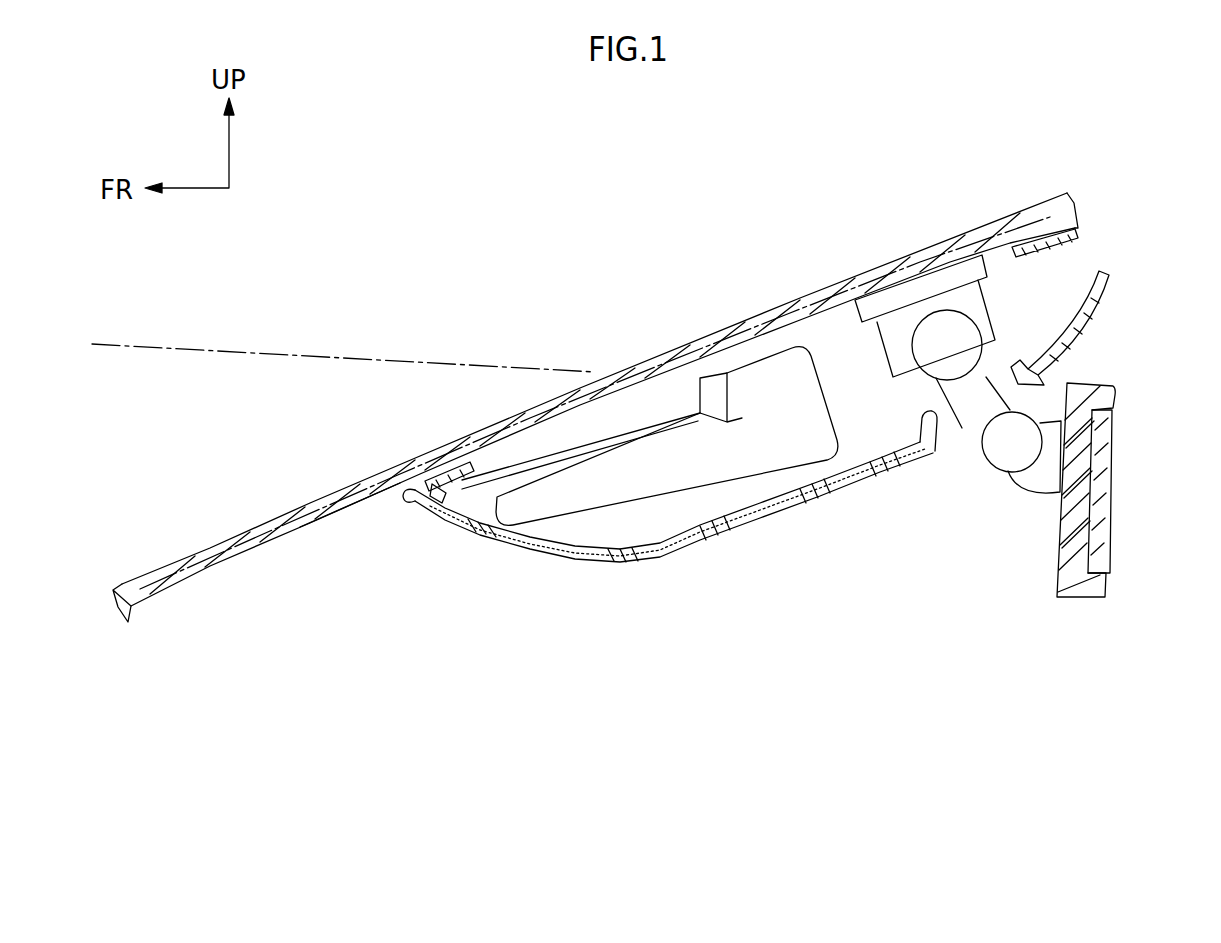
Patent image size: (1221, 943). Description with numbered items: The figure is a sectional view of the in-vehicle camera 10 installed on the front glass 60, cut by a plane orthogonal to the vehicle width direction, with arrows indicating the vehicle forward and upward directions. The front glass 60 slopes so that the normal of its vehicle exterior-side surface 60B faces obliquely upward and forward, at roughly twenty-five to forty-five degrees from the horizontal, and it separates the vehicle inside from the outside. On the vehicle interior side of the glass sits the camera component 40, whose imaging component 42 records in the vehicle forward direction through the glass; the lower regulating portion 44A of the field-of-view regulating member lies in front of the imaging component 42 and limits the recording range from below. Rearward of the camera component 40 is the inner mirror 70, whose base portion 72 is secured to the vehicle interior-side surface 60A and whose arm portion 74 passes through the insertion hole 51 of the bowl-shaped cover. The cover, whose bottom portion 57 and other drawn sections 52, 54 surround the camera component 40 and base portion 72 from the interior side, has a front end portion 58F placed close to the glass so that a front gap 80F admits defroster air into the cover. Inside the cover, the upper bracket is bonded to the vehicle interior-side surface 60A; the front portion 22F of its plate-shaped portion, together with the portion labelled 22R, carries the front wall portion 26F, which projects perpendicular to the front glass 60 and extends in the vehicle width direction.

The in-vehicle camera 10 is at (828, 562).
The front glass 60 is at (595, 411).
The vehicle interior-side surface 60A is at (238, 568).
The vehicle exterior-side surface 60B is at (266, 521).
The front portion of the plate-shaped portion 22F is at (472, 462).
The rear gasket 22R is at (1056, 243).
The front wall portion 26F is at (438, 497).
The camera component 40 is at (704, 436).
The imaging component 42 is at (698, 396).
The lower regulating portion 44A is at (490, 500).
The insertion hole 51 is at (950, 418).
The frame lower portion 52 is at (668, 517).
The frame rear portion 54 is at (1100, 314).
The bottom portion 57 is at (784, 518).
The front end portion 58F is at (405, 506).
The inner mirror 70 is at (1120, 437).
The base portion 72 is at (987, 293).
The arm portion 74 is at (960, 434).
The front gap 80F is at (388, 504).